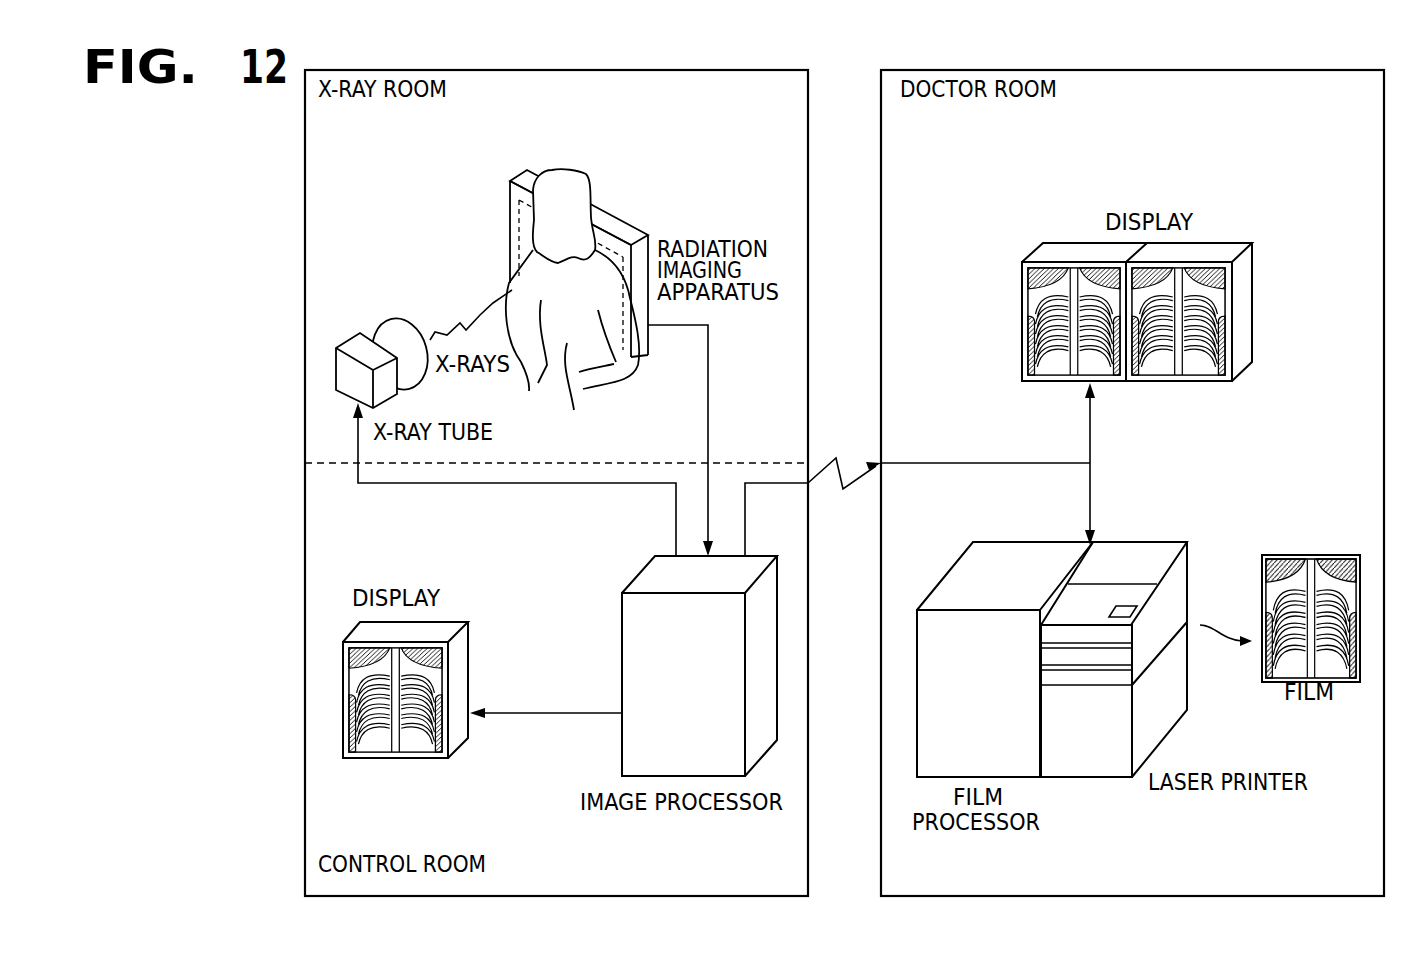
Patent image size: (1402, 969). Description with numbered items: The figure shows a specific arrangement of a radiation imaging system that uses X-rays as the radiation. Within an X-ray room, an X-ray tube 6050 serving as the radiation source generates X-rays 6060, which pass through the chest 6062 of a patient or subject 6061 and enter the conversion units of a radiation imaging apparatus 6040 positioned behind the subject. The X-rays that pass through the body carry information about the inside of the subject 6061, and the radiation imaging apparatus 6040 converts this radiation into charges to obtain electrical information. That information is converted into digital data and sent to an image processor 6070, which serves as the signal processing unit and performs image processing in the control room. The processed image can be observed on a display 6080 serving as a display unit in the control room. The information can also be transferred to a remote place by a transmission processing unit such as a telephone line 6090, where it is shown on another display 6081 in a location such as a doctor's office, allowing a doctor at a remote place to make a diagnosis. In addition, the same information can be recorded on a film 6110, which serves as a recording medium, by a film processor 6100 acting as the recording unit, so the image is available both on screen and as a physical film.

The radiation imaging apparatus 6040 is at (615, 236).
The X-ray tube 6050 is at (348, 335).
The X-rays 6060 is at (438, 333).
The subject 6061 is at (572, 170).
The chest 6062 is at (570, 395).
The image processor 6070 is at (620, 745).
The display 6080 is at (470, 661).
The display 6081 is at (1055, 246).
The telephone line 6090 is at (848, 467).
The film processor 6100 is at (1022, 541).
The film 6110 is at (1311, 555).